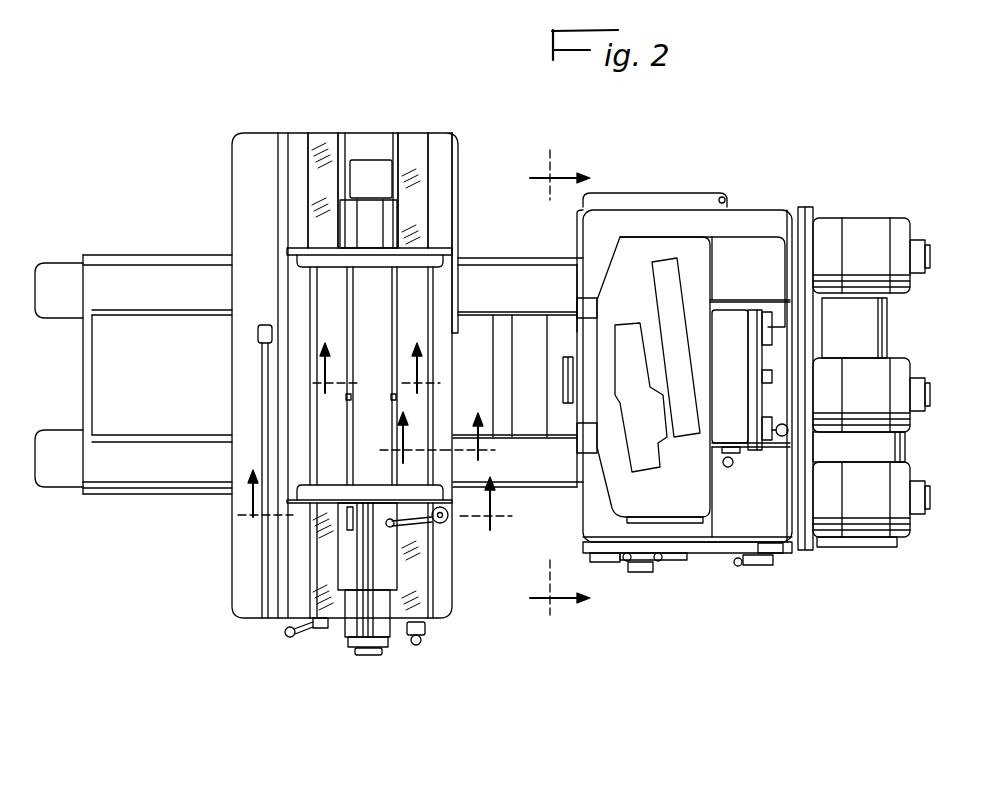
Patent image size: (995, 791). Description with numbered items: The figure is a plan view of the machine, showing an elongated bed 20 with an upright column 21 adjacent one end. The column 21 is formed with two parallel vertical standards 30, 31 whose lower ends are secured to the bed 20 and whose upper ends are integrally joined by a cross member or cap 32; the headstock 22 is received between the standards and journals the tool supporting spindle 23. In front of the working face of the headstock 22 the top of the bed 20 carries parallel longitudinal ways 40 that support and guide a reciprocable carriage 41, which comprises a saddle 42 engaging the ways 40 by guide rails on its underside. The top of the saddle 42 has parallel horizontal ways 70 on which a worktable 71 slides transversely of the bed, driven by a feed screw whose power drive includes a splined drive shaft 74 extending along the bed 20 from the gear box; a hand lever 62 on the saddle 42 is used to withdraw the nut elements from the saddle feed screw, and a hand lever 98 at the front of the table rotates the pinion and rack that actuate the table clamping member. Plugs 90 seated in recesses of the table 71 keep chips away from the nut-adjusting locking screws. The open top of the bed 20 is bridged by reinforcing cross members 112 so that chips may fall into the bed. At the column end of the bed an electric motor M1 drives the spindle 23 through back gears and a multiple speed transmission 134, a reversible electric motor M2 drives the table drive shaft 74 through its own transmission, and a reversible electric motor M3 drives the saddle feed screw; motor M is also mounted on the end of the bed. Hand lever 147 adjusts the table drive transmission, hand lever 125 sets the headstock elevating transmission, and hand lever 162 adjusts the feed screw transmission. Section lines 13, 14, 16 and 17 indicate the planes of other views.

The elongated bed 20 is at (83, 395).
The longitudinal ways 40 is at (137, 265).
The saddle 42 is at (232, 218).
The reciprocable carriage 41 is at (468, 178).
The horizontal ways 70 is at (332, 135).
The worktable 71 is at (297, 268).
The splined drive shaft 74 is at (363, 656).
The hand lever 98 is at (447, 522).
The hand lever 62 is at (300, 640).
The section line 13 is at (376, 354).
The section line 16 is at (442, 437).
The section line 14 is at (375, 513).
The section line 17 is at (576, 382).
The reinforcing cross members 112 is at (500, 363).
The tool supporting spindle 23 is at (563, 382).
The upright column 21 is at (745, 238).
The vertical standard 31 is at (770, 245).
The cross member or cap 32 is at (655, 245).
The headstock 22 is at (583, 352).
The vertical standard 30 is at (762, 505).
The reversible electric motor M2 is at (905, 225).
The multiple speed transmission 134 is at (895, 327).
The motor M is at (905, 372).
The electric motor M1 is at (900, 447).
The reversible electric motor M3 is at (905, 478).
The hand lever 147 is at (613, 556).
The hand lever 125 is at (678, 561).
The hand lever 162 is at (753, 566).
The plugs 90 is at (391, 397).